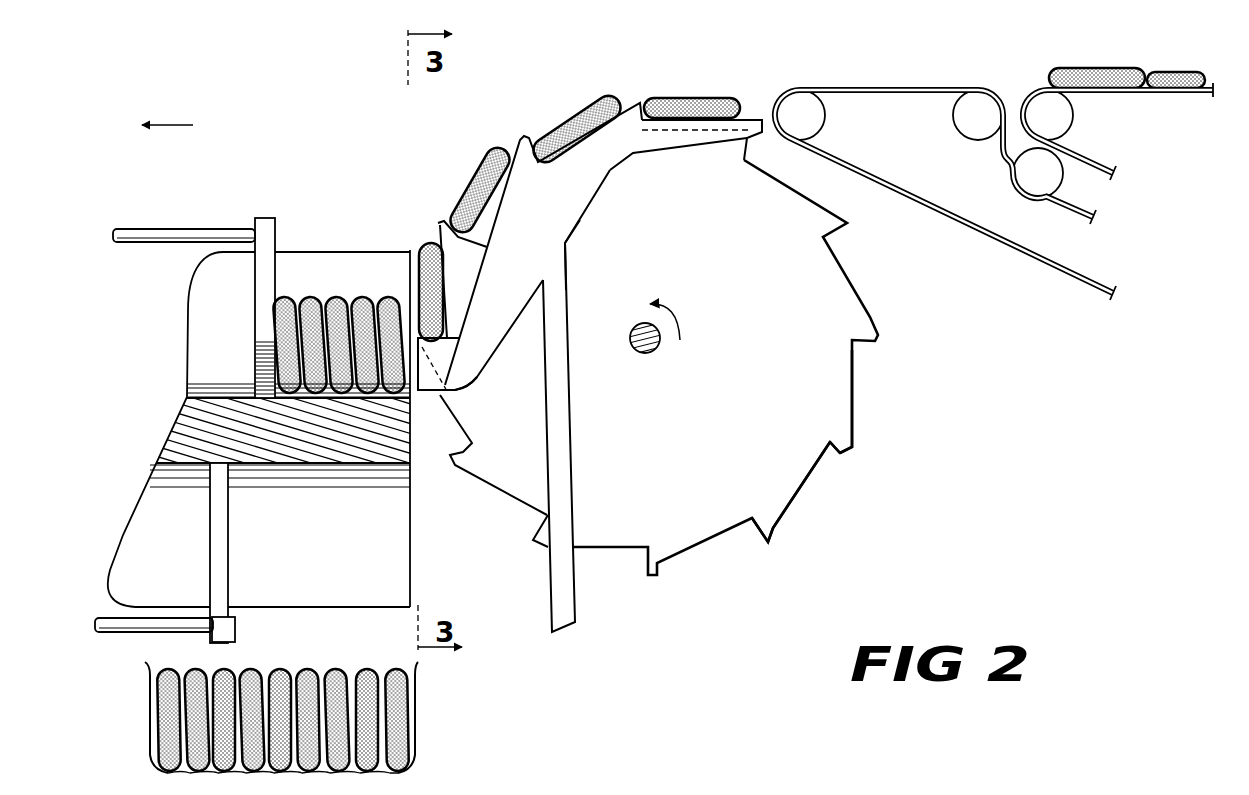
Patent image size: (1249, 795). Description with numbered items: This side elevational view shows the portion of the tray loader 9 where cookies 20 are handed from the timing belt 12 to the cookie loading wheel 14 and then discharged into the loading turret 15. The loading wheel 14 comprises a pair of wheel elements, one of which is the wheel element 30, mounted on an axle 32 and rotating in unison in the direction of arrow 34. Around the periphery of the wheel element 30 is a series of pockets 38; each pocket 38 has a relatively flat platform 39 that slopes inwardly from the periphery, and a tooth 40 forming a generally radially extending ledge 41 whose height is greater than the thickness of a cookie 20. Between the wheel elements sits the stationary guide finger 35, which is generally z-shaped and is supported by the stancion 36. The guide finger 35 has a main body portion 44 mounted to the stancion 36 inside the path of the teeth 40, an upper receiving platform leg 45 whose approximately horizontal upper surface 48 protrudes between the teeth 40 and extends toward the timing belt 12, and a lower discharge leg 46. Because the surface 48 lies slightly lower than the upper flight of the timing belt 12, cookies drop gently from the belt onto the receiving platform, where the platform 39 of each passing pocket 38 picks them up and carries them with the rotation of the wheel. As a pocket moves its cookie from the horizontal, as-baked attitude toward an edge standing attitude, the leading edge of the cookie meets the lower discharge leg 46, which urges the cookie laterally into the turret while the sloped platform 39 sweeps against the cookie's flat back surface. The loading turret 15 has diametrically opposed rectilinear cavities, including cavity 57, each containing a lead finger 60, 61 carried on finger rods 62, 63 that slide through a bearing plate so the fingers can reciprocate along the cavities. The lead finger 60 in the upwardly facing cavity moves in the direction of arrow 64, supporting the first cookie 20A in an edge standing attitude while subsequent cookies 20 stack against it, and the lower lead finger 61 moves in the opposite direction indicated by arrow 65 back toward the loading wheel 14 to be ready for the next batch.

The tray loader 9 is at (790, 50).
The timing belt 12 is at (982, 236).
The cookie loading wheel 14 is at (875, 300).
The loading turret 15 is at (340, 247).
The cookie 20 is at (347, 297).
The first cookie 20A is at (281, 297).
The wheel element 30 is at (823, 412).
The axle 32 is at (640, 352).
The arrow 34 is at (677, 318).
The stationary guide finger 35 is at (580, 207).
The stancion 36 is at (568, 607).
The pocket 38 is at (792, 529).
The platform 39 is at (797, 497).
The tooth 40 is at (847, 445).
The ledge 41 is at (835, 452).
The main body portion 44 is at (570, 235).
The upper receiving platform leg 45 is at (668, 152).
The lower discharge leg 46 is at (442, 398).
The receiving platform surface 48 is at (753, 117).
The cookie receiving cavity 57 is at (403, 543).
The lead finger 60 is at (264, 223).
The lead finger 61 is at (226, 546).
The finger rod 62 is at (133, 245).
The finger rod 63 is at (128, 632).
The arrow 64 is at (170, 124).
The arrow 65 is at (416, 711).